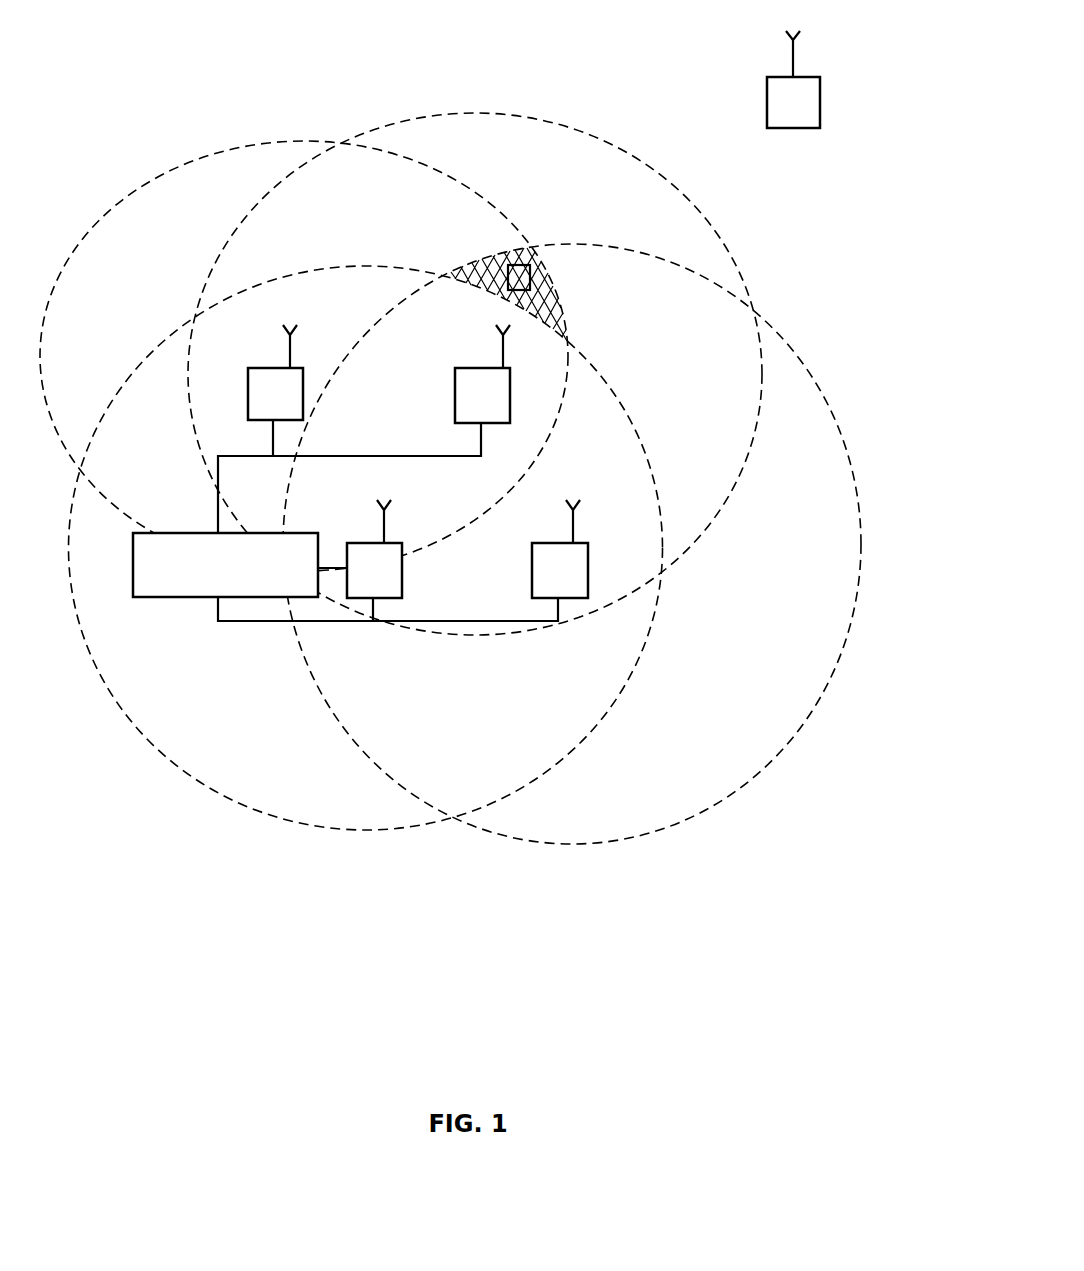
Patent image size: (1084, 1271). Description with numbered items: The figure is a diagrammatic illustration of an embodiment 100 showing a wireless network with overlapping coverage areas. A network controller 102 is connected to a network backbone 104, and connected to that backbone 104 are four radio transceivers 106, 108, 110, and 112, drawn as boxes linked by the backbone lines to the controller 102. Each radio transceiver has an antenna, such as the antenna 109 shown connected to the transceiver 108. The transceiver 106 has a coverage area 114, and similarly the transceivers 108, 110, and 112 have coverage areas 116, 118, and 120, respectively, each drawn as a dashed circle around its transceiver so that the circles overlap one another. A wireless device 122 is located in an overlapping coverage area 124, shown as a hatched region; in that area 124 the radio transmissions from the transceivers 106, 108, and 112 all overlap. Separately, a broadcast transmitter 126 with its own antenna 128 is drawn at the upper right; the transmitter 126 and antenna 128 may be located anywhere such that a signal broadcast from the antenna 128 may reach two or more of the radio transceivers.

The wireless network with overlapping coverage areas 100 is at (248, 862).
The network controller 102 is at (225, 565).
The network backbone 104 is at (237, 622).
The radio transceiver 106 is at (303, 405).
The radio transceiver 108 is at (614, 368).
The antenna 109 is at (592, 328).
The radio transceiver 110 is at (402, 583).
The radio transceiver 112 is at (588, 558).
The coverage area 114 is at (181, 166).
The coverage area 116 is at (604, 144).
The coverage area 118 is at (380, 828).
The coverage area 120 is at (663, 832).
The wireless device 122 is at (506, 283).
The overlapping coverage area 124 is at (498, 261).
The broadcast transmitter 126 is at (778, 107).
The antenna 128 is at (745, 40).